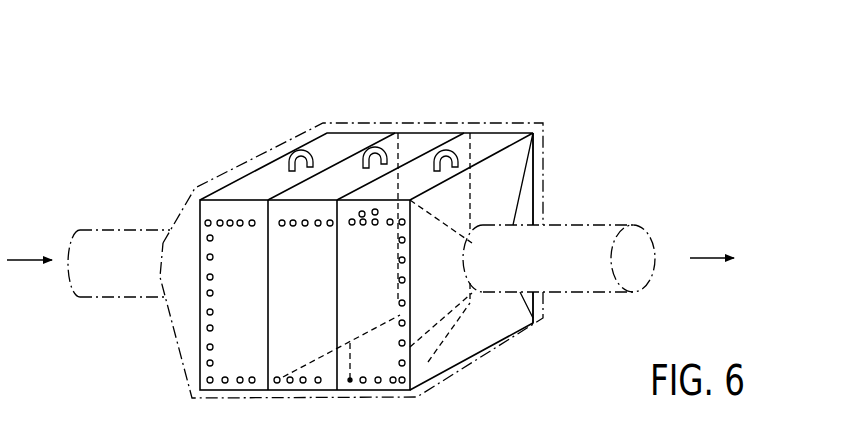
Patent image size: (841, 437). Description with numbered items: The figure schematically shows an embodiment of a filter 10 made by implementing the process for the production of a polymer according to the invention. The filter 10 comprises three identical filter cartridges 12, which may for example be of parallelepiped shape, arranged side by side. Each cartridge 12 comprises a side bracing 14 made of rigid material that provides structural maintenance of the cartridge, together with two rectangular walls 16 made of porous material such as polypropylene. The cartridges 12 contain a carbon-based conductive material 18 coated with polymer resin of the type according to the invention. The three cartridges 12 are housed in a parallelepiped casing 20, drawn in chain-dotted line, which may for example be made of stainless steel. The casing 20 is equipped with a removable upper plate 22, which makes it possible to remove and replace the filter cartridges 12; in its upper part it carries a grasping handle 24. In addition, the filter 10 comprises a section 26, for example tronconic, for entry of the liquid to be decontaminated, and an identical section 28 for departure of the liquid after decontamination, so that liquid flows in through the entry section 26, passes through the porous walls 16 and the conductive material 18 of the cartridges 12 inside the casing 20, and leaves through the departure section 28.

The filter 10 is at (559, 107).
The filter cartridge 12 is at (327, 131).
The side bracing 14 is at (243, 255).
The rectangular wall 16 is at (235, 269).
The carbon-based conductive material 18 is at (276, 166).
The parallelepiped casing 20 is at (543, 123).
The removable upper plate 22 is at (290, 207).
The grasping handle 24 is at (373, 148).
The tronconic entry section 26 is at (182, 223).
The departure section 28 is at (533, 192).